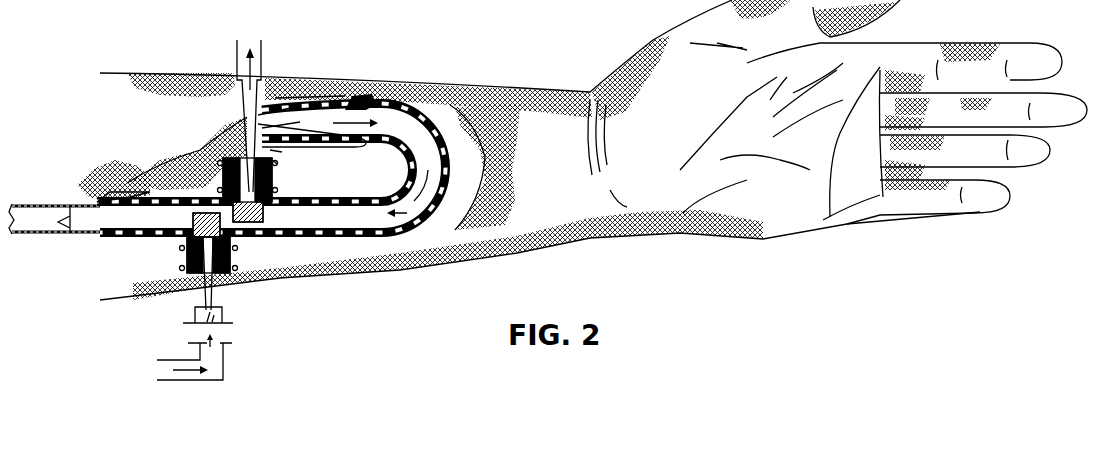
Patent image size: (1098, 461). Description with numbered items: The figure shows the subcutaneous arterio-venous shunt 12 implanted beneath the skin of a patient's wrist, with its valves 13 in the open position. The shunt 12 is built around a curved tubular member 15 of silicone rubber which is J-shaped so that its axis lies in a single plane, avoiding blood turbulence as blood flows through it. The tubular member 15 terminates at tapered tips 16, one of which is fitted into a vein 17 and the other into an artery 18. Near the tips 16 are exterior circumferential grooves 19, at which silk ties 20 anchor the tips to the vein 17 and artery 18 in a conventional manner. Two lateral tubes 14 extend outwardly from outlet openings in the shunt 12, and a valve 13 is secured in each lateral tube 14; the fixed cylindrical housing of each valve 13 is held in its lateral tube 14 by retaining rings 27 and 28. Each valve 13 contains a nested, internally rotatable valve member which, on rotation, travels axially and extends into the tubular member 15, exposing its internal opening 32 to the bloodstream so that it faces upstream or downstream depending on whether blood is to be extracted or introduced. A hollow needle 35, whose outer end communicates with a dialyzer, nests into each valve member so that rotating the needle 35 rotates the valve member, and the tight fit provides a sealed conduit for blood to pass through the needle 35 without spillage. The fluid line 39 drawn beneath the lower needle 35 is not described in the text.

The subcutaneous arterio-venous shunt 12 is at (413, 107).
The valve 13 is at (272, 174).
The lateral tube 14 is at (186, 255).
The curved tubular member 15 is at (388, 168).
The tapered tip 16 is at (70, 237).
The vein 17 is at (37, 237).
The artery 18 is at (282, 97).
The exterior circumferential groove 19 is at (360, 100).
The silk tie 20 is at (365, 146).
The retaining ring 27 is at (277, 163).
The retaining ring 28 is at (342, 185).
The internal opening 32 is at (263, 212).
The hollow needle 35 is at (265, 46).
The fluid line 39 is at (224, 370).